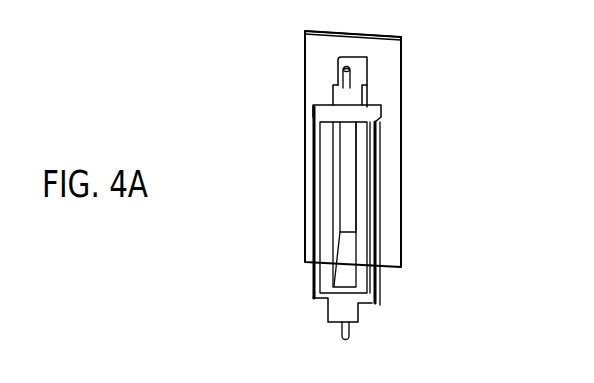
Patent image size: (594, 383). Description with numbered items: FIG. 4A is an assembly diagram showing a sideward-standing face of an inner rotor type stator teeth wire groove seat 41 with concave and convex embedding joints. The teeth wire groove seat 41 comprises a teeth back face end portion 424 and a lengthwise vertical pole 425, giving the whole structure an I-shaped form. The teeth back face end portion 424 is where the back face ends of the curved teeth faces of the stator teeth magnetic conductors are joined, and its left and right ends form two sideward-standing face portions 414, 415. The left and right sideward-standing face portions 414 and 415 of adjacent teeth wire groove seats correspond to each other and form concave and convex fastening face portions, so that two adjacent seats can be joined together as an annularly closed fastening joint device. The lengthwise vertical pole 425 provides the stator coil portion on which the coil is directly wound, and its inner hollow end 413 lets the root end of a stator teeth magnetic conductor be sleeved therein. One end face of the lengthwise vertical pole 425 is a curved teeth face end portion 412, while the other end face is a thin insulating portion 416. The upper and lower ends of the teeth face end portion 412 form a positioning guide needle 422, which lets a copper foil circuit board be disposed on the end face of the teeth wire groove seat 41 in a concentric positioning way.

The teeth wire groove seat 41 is at (505, 32).
The curved teeth face end portion 412 is at (345, 297).
The inner hollow end 413 is at (345, 193).
The left sideward-standing face portion 414 is at (314, 110).
The right sideward-standing face portion 415 is at (378, 118).
The thin insulating portion 416 is at (383, 52).
The positioning guide needle 422 is at (338, 66).
The teeth back face end portion 424 is at (322, 214).
The lengthwise vertical pole 425 is at (358, 75).